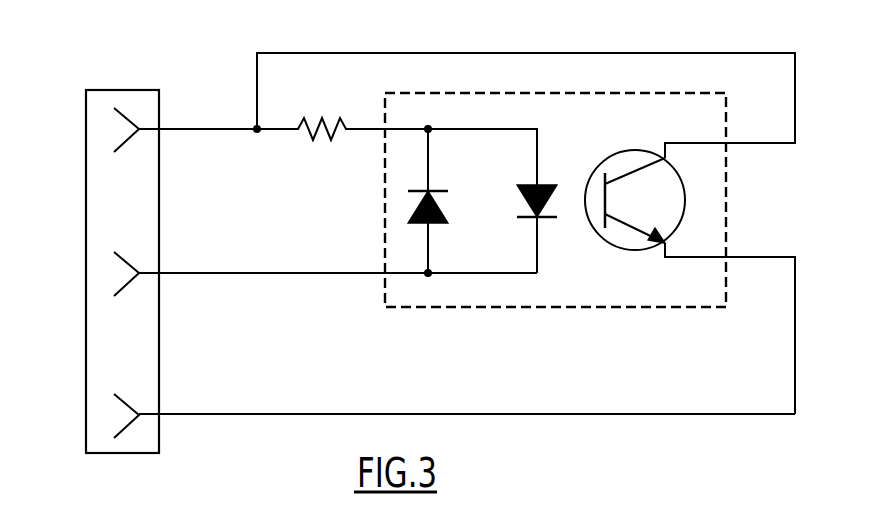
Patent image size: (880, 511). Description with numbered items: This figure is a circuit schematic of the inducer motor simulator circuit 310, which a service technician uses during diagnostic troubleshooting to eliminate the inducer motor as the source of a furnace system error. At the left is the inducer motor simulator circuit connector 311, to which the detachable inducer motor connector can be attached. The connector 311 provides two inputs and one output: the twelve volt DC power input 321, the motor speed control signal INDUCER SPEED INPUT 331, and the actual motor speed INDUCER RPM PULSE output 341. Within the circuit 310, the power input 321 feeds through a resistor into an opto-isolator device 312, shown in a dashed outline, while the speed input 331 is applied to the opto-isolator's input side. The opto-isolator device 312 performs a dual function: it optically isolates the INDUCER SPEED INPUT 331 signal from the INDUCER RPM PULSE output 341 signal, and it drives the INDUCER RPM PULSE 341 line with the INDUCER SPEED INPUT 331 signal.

The inducer motor simulator circuit 310 is at (558, 53).
The inducer motor simulator circuit connector 311 is at (118, 90).
The opto-isolator device 312 is at (585, 105).
The 12 VDC POWER input 321 is at (123, 143).
The INDUCER SPEED INPUT 331 is at (123, 287).
The INDUCER RPM PULSE output 341 is at (123, 429).